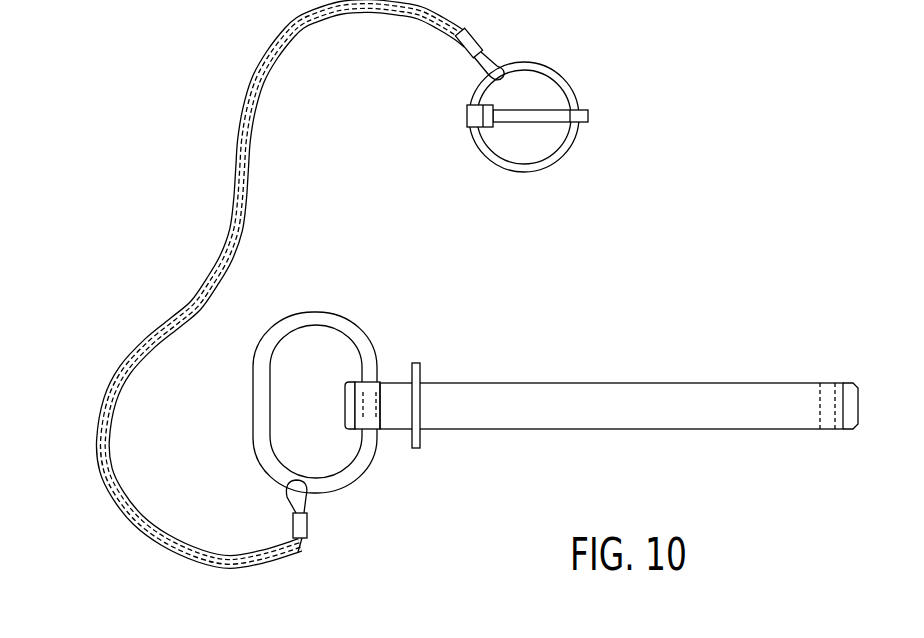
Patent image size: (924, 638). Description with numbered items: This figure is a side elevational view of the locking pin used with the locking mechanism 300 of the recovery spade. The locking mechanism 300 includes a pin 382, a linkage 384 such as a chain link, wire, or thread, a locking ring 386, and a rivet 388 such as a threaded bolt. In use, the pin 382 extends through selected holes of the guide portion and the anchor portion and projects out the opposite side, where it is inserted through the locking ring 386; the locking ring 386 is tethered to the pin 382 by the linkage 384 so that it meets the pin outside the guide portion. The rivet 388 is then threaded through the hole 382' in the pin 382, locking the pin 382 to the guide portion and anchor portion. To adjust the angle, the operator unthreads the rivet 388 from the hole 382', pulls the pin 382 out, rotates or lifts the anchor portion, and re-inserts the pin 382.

The locking mechanism 300 is at (887, 172).
The pin 382 is at (555, 402).
The hole 382' is at (811, 385).
The linkage 384 is at (222, 255).
The locking ring 386 is at (555, 73).
The rivet 388 is at (590, 112).